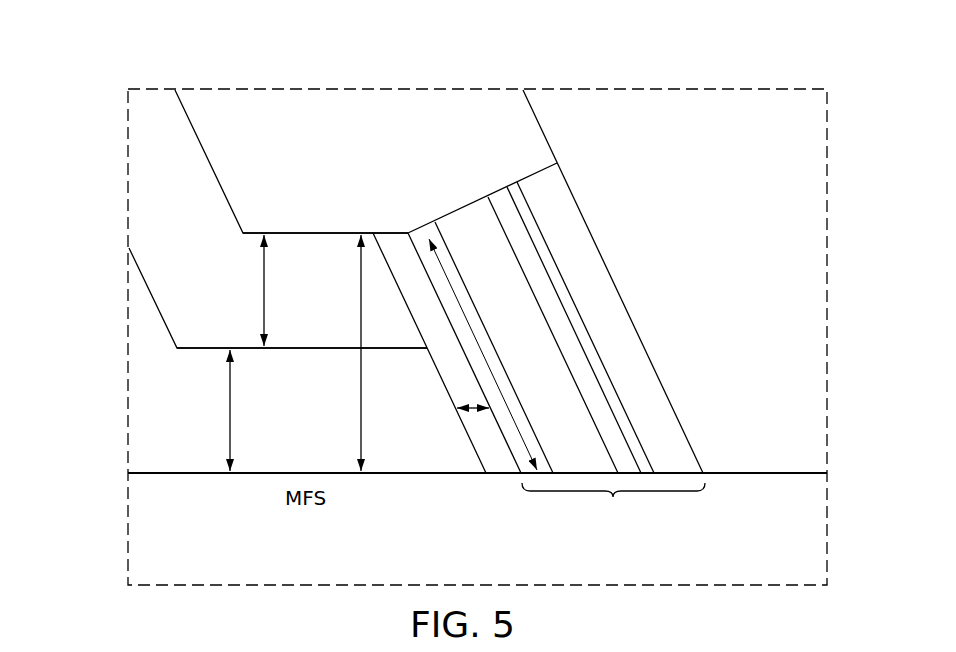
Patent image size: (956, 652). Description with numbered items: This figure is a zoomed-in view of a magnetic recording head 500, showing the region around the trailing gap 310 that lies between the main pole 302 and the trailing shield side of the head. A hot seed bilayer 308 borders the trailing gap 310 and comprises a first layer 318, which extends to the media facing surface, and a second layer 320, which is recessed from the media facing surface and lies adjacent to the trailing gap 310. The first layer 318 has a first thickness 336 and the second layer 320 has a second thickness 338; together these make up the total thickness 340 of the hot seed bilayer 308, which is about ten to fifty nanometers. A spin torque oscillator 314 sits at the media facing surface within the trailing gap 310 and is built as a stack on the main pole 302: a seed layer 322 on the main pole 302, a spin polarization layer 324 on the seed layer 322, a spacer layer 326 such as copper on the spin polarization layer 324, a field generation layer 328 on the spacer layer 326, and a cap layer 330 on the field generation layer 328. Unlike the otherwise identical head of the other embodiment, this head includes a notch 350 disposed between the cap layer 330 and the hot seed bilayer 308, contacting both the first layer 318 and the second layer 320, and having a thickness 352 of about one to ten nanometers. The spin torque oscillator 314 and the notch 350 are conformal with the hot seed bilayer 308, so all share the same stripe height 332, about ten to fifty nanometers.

The magnetic recording head 500 is at (158, 62).
The hot seed bilayer 308 is at (120, 240).
The trailing gap 310 is at (300, 140).
The main pole 302 is at (757, 207).
The seed layer 322 is at (577, 221).
The spin polarization layer 324 is at (510, 185).
The spacer layer 326 is at (502, 198).
The field generation layer 328 is at (522, 304).
The cap layer 330 is at (417, 235).
The notch 350 is at (452, 372).
The thickness of the notch 352 is at (472, 423).
The second layer 320 is at (336, 318).
The first layer 318 is at (336, 416).
The second thickness 338 is at (263, 282).
The first thickness 336 is at (230, 419).
The total thickness 340 is at (362, 407).
The stripe height 332 is at (512, 412).
The spin torque oscillator 314 is at (613, 504).